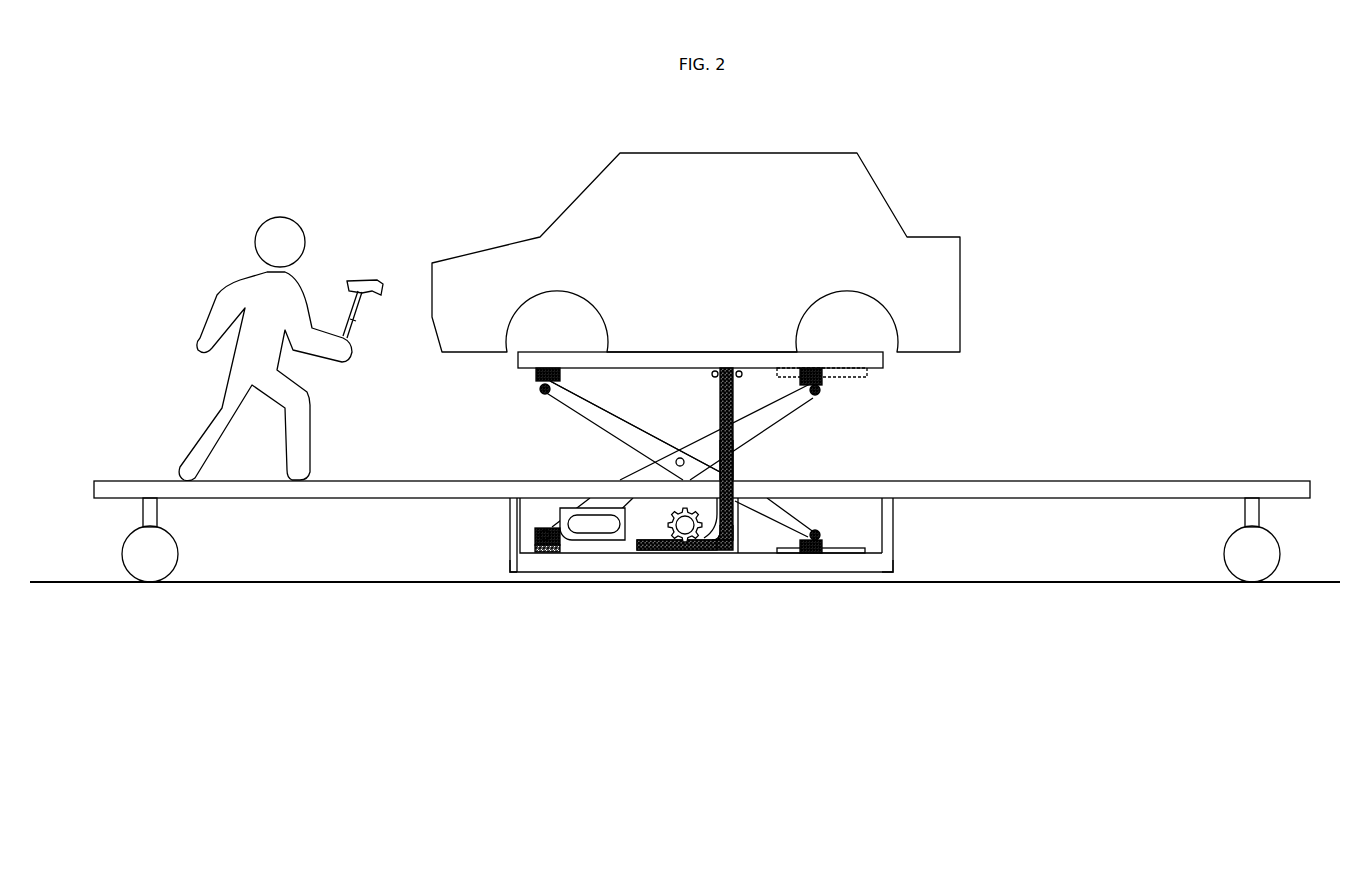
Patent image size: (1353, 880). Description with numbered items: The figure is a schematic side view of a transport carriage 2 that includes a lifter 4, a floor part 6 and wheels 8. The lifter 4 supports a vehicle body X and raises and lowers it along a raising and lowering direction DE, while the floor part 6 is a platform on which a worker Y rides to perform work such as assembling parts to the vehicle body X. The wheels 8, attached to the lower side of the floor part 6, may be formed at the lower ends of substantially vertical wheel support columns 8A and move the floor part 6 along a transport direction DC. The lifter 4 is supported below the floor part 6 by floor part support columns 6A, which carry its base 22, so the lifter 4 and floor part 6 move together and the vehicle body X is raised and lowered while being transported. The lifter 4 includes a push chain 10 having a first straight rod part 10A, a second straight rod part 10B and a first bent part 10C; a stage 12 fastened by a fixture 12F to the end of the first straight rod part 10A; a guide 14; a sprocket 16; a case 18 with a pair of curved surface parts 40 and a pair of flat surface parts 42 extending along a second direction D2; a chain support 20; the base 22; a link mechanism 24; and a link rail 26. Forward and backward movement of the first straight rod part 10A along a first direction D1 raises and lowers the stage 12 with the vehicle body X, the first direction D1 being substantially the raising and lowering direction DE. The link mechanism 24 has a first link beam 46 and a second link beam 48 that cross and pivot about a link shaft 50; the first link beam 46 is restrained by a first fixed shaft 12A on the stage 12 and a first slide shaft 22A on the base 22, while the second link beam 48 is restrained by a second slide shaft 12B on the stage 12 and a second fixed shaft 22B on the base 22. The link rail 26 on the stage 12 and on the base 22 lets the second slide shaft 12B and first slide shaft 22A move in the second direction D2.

The transport carriage 2 is at (1101, 287).
The vehicle body X is at (883, 172).
The worker Y is at (230, 223).
The lifter 4 is at (422, 385).
The floor part 6 is at (1263, 480).
The floor part support columns 6A is at (514, 574).
The wheels 8 is at (150, 582).
The wheel support columns 8A is at (158, 521).
The push chain 10 is at (738, 401).
The first straight rod part 10A is at (742, 460).
The second straight rod part 10B is at (673, 553).
The first bent part 10C is at (718, 553).
The stage 12 is at (520, 363).
The first fixed shaft 12A is at (537, 389).
The second slide shaft 12B is at (822, 390).
The fixture 12F is at (740, 370).
The guide 14 is at (749, 529).
The sprocket 16 is at (665, 527).
The case 18 is at (549, 522).
The chain support 20 is at (615, 554).
The base 22 is at (590, 566).
The first slide shaft 22A is at (823, 535).
The second fixed shaft 22B is at (535, 535).
The link mechanism 24 is at (610, 407).
The link rail 26 is at (845, 368).
The curved surface parts 40 is at (573, 540).
The flat surface parts 42 is at (590, 518).
The first link beam 46 is at (615, 422).
The second link beam 48 is at (633, 474).
The link shaft 50 is at (680, 456).
The first direction D1 is at (815, 410).
The second direction D2 is at (660, 563).
The raising and lowering direction DE is at (464, 362).
The transport direction DC is at (173, 507).